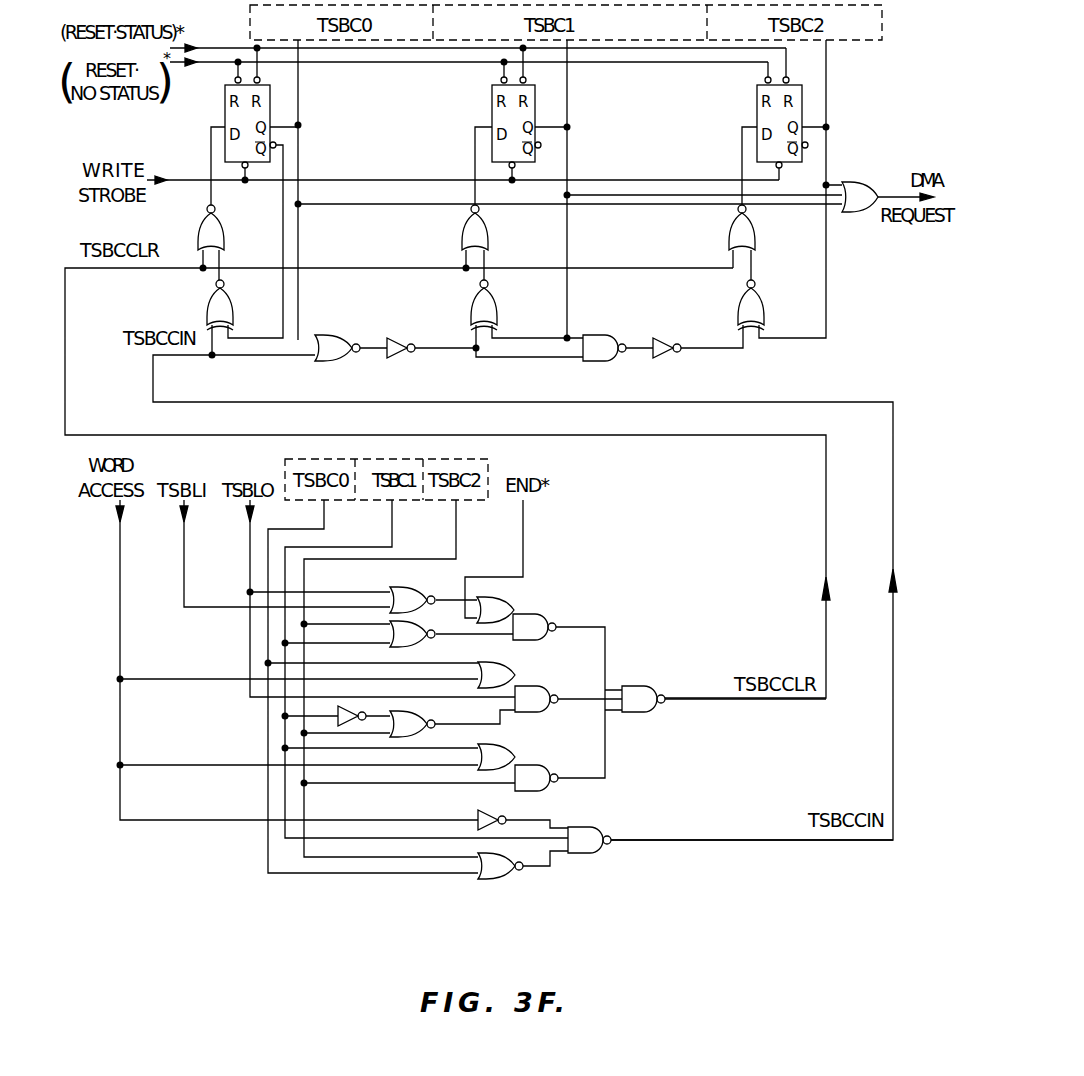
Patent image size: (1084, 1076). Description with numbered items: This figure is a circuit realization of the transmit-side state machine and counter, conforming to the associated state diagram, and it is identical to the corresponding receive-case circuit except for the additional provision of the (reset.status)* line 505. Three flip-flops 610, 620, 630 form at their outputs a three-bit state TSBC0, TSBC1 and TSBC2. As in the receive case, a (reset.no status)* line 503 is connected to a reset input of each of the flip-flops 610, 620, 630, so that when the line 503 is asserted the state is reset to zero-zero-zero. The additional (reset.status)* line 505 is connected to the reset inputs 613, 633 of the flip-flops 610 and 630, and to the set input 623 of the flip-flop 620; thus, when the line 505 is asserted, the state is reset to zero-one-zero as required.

The (reset.status)* line 505 is at (180, 48).
The (reset.no status)* line 503 is at (186, 60).
The flip-flop 610 is at (235, 77).
The reset input 613 is at (260, 78).
The flip-flop 620 is at (501, 77).
The set input 623 is at (526, 78).
The flip-flop 630 is at (765, 76).
The reset input 633 is at (786, 77).